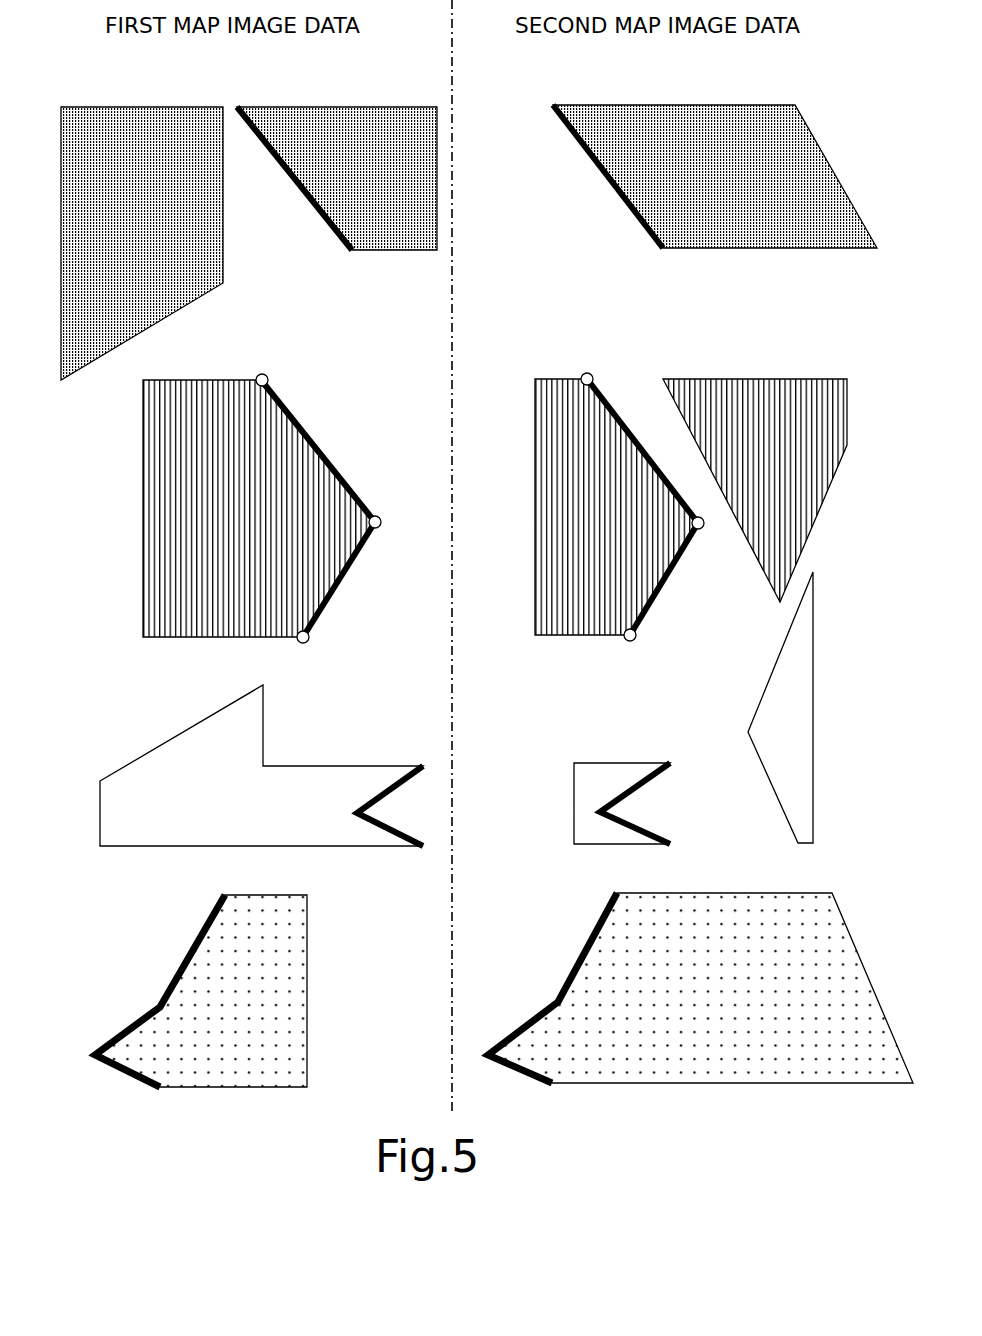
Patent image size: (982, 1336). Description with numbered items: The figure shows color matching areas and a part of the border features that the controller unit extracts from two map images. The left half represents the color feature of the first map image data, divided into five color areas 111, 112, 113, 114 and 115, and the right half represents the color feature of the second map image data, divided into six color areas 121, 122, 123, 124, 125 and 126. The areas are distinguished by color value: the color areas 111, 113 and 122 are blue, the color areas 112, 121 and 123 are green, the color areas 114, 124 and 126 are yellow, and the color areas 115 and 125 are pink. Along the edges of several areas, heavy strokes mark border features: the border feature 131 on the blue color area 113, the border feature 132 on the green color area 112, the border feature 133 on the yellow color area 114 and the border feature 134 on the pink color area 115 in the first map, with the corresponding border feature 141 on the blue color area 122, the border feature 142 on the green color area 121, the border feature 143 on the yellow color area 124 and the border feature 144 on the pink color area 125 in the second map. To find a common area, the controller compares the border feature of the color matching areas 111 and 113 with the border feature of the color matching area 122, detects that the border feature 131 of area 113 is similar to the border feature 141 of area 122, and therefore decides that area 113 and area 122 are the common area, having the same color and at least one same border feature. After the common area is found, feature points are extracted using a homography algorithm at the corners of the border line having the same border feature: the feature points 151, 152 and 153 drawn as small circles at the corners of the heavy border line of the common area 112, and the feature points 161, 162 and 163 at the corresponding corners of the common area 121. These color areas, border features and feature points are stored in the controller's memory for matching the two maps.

The color area 111 is at (137, 155).
The color area 112 is at (203, 443).
The color area 113 is at (333, 138).
The color area 114 is at (145, 798).
The color area 115 is at (268, 1007).
The border feature 131 is at (302, 193).
The border feature 132 is at (323, 450).
The border feature 133 is at (407, 772).
The border feature 134 is at (188, 952).
The feature point 151 is at (265, 372).
The feature point 152 is at (378, 513).
The feature point 153 is at (310, 643).
The color area 121 is at (577, 408).
The color area 122 is at (708, 152).
The color area 123 is at (758, 427).
The color area 124 is at (602, 795).
The color area 125 is at (777, 1035).
The color area 126 is at (793, 715).
The border feature 141 is at (605, 183).
The border feature 142 is at (637, 438).
The border feature 143 is at (633, 785).
The border feature 144 is at (582, 950).
The feature point 161 is at (590, 372).
The feature point 162 is at (703, 527).
The feature point 163 is at (635, 637).